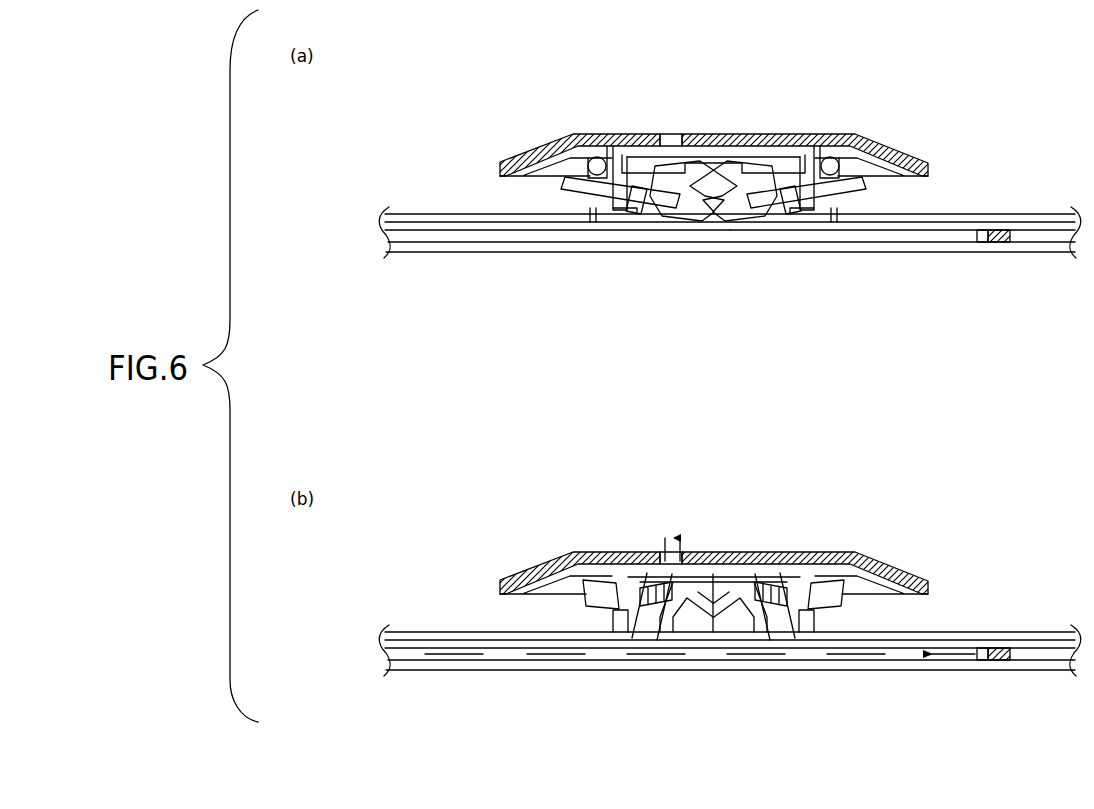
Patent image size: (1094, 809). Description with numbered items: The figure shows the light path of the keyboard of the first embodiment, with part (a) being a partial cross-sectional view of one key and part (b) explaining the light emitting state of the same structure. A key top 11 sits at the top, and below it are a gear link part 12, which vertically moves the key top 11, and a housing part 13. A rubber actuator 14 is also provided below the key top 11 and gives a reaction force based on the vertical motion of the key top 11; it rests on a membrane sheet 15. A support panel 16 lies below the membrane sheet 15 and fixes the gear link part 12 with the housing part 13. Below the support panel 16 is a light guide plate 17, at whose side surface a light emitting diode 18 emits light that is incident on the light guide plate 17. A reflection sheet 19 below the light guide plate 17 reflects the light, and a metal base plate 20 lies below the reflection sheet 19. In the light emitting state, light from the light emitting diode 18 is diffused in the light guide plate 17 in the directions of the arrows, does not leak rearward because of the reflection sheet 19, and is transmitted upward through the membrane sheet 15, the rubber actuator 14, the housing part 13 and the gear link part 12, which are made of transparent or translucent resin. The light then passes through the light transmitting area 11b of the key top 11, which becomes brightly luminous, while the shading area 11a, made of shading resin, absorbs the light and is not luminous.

The key top 11 is at (907, 157).
The shading area 11a is at (556, 134).
The light transmitting area 11b is at (672, 133).
The gear link part 12 is at (683, 212).
The housing part 13 is at (600, 207).
The rubber actuator 14 is at (722, 165).
The membrane sheet 15 is at (1041, 213).
The support panel 16 is at (429, 231).
The light guide plate 17 is at (888, 236).
The light emitting diode 18 is at (1000, 243).
The reflection sheet 19 is at (488, 246).
The base plate 20 is at (813, 253).